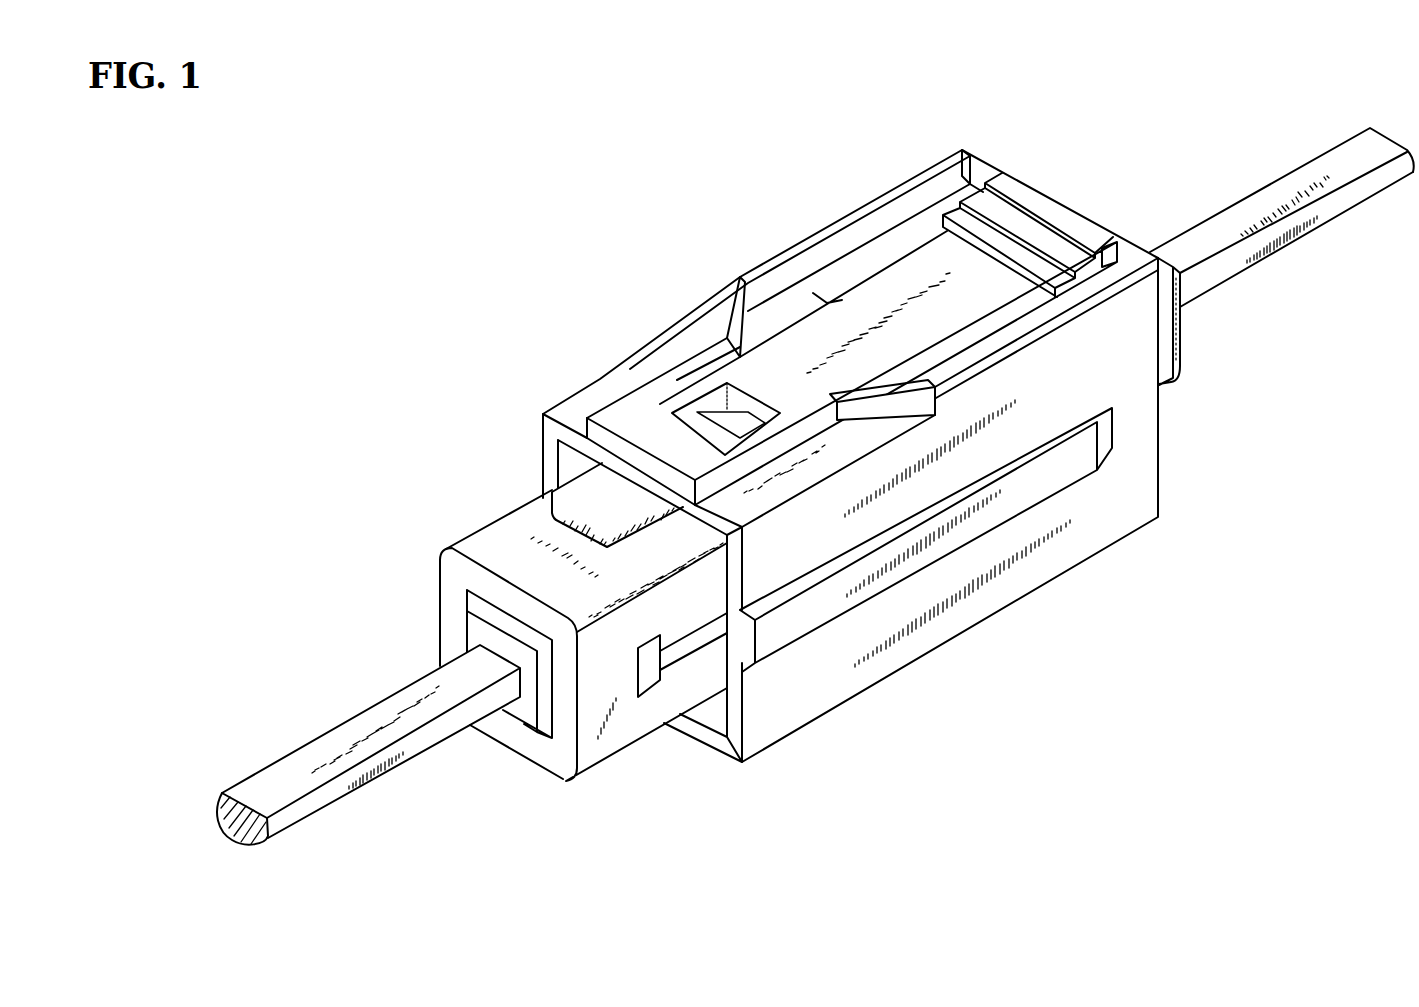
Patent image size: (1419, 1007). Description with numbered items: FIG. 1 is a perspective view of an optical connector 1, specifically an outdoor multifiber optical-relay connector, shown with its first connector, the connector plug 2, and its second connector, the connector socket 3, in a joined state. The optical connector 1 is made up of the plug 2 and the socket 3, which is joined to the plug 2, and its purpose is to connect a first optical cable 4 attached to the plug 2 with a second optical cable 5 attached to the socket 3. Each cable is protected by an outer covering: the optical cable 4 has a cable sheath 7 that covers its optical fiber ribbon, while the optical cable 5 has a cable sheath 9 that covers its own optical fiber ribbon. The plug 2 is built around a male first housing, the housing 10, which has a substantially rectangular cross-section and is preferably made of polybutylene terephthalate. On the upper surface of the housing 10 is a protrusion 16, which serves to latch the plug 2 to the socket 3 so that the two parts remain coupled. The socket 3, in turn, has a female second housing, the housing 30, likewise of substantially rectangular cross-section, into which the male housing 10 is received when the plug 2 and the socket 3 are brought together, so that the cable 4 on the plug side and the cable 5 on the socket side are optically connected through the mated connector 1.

The optical connector 1 is at (560, 232).
The connector plug 2 is at (437, 540).
The connector socket 3 is at (856, 200).
The optical cable 4 is at (340, 708).
The optical cable 5 is at (1226, 198).
The cable sheath 7 is at (318, 802).
The cable sheath 9 is at (1223, 272).
The housing 10 is at (610, 732).
The protrusion 16 is at (576, 497).
The housing 30 is at (997, 592).